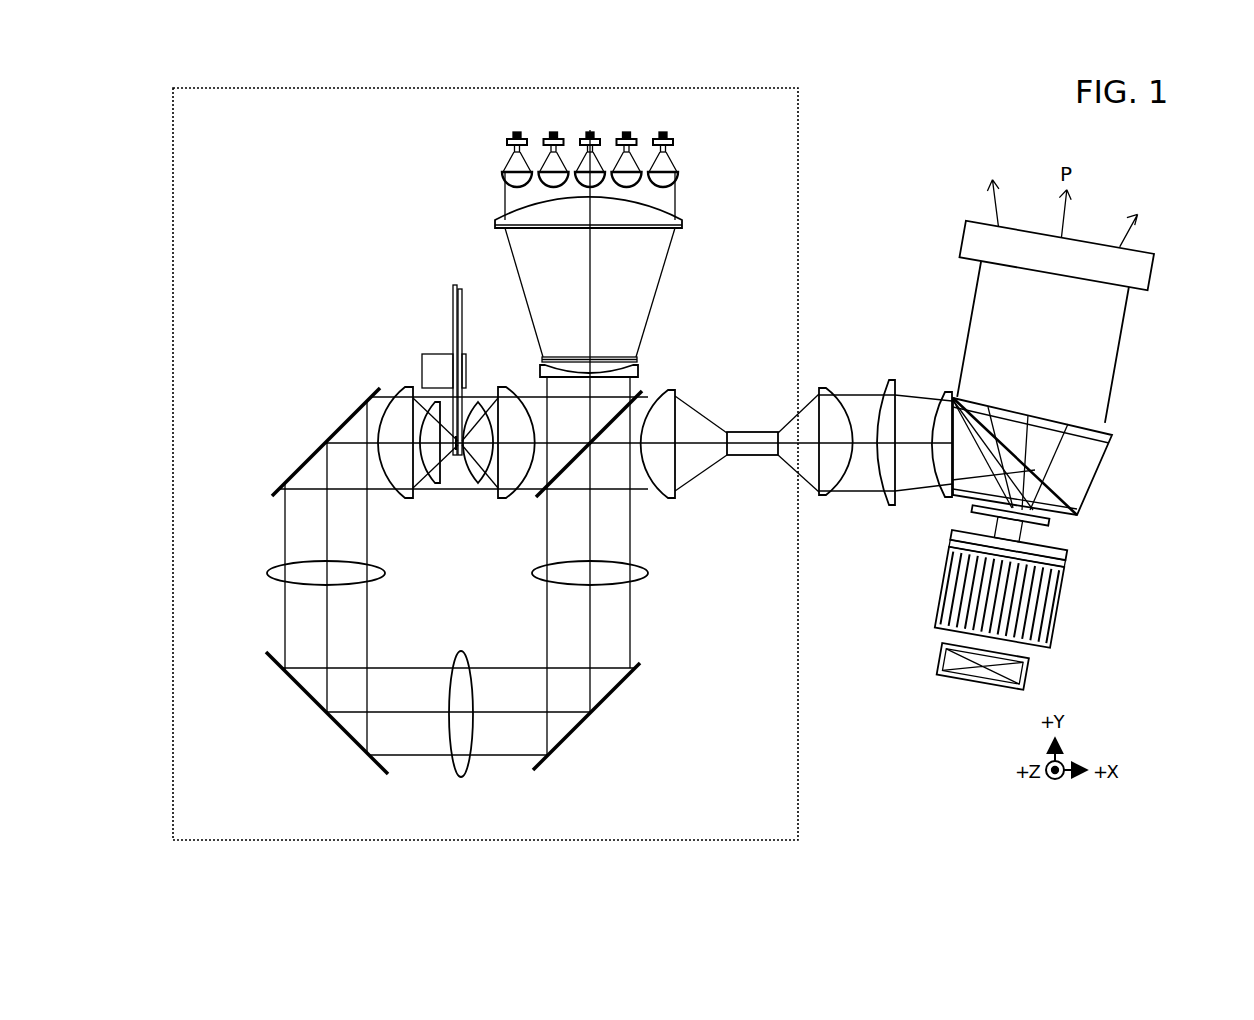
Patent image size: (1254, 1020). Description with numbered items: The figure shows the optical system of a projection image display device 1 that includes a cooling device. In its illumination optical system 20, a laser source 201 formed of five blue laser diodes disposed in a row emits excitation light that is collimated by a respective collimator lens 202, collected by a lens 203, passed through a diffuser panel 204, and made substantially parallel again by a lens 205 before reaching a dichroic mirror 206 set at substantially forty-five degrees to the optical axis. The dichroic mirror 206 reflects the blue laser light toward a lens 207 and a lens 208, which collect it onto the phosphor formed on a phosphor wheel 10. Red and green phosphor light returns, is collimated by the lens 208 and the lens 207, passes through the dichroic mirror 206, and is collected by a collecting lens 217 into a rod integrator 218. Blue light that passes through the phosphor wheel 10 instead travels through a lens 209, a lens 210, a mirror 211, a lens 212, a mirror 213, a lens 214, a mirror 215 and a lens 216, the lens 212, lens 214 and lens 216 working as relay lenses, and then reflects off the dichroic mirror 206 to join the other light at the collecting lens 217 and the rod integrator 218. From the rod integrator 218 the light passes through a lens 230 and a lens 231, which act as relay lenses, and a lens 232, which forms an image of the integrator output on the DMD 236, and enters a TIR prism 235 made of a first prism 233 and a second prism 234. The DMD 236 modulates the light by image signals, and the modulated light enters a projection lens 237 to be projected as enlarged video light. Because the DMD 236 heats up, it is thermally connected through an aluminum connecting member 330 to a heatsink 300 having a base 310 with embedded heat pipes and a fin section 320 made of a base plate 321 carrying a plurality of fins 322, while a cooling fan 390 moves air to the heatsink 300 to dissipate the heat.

The projection image display device 1 is at (978, 141).
The illumination optical system 20 is at (803, 143).
The phosphor wheel 10 is at (454, 285).
The laser source 201 is at (670, 148).
The collimator lens 202 is at (662, 180).
The lens 203 is at (683, 225).
The diffuser panel 204 is at (638, 359).
The lens 205 is at (640, 370).
The dichroic mirror 206 is at (646, 390).
The lens 207 is at (505, 492).
The lens 208 is at (466, 450).
The lens 209 is at (432, 407).
The lens 210 is at (404, 410).
The mirror 211 is at (296, 462).
The lens 212 is at (272, 575).
The mirror 213 is at (305, 697).
The lens 214 is at (462, 652).
The mirror 215 is at (612, 704).
The lens 216 is at (642, 577).
The collecting lens 217 is at (677, 394).
The rod integrator 218 is at (755, 449).
The lens 230 is at (822, 388).
The lens 231 is at (887, 384).
The lens 232 is at (945, 391).
The first prism 233 is at (1055, 505).
The second prism 234 is at (1098, 437).
The TIR prism 235 is at (1083, 465).
The DMD 236 is at (973, 510).
The projection lens 237 is at (1000, 345).
The heatsink 300 is at (976, 603).
The base 310 is at (950, 539).
The fin section 320 is at (944, 603).
The base plate 321 is at (950, 553).
The fins 322 is at (942, 606).
The connecting member 330 is at (1064, 539).
The cooling fan 390 is at (955, 678).